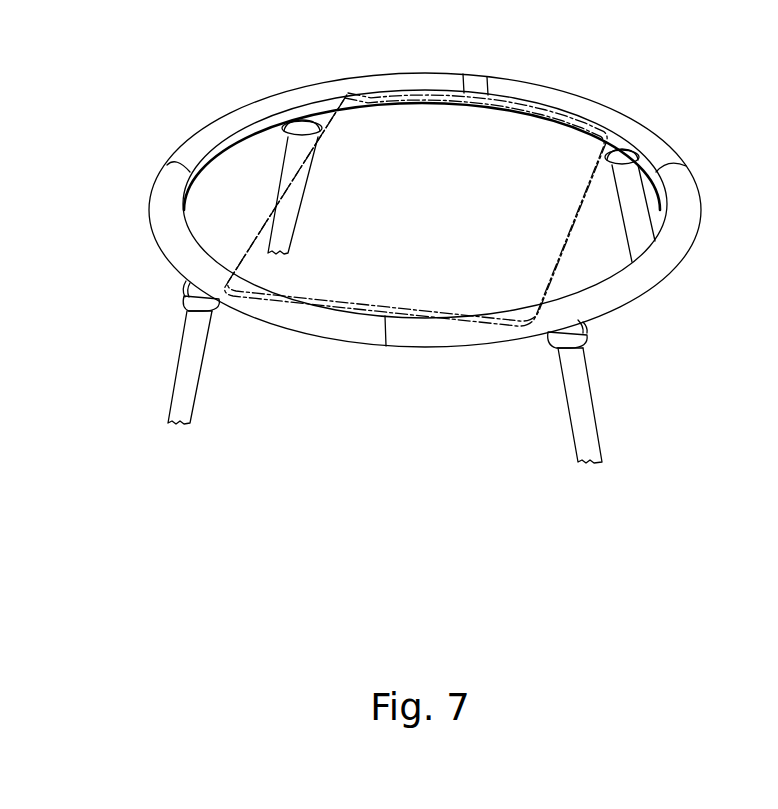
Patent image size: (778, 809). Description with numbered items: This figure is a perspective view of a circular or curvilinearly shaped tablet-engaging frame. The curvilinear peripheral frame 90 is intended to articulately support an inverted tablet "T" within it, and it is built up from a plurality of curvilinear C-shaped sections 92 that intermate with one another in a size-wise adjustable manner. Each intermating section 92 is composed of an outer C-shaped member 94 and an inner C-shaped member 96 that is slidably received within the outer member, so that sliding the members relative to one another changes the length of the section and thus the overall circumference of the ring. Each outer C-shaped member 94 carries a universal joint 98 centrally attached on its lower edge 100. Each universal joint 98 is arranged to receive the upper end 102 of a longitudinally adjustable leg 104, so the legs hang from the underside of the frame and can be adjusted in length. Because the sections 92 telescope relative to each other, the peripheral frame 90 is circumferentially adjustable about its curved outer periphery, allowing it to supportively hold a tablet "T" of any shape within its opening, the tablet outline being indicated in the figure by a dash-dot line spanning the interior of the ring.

The curvilinear peripheral frame 90 is at (238, 88).
The curvilinear C-shaped section 92 is at (210, 128).
The outer C-shaped member 94 is at (330, 88).
The inner C-shaped member 96 is at (155, 183).
The universal joint 98 is at (185, 298).
The lower edge 100 is at (187, 283).
The upper end 102 is at (185, 311).
The longitudinally adjustable leg 104 is at (290, 160).
The tablet T is at (357, 90).